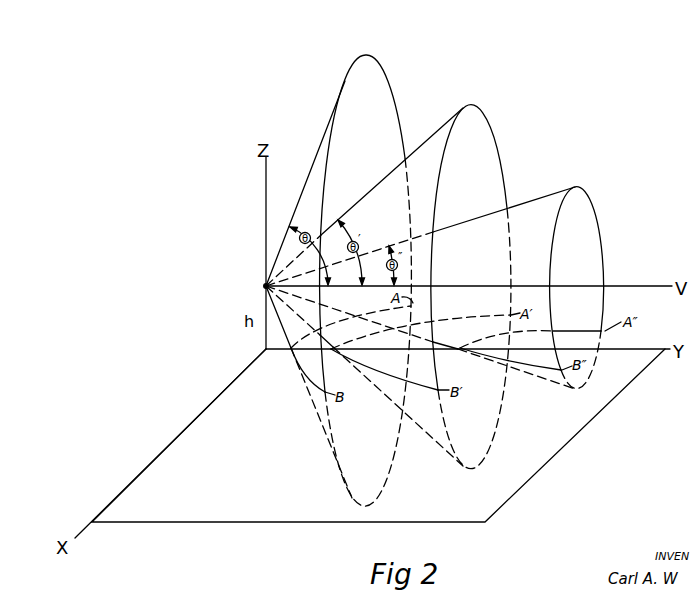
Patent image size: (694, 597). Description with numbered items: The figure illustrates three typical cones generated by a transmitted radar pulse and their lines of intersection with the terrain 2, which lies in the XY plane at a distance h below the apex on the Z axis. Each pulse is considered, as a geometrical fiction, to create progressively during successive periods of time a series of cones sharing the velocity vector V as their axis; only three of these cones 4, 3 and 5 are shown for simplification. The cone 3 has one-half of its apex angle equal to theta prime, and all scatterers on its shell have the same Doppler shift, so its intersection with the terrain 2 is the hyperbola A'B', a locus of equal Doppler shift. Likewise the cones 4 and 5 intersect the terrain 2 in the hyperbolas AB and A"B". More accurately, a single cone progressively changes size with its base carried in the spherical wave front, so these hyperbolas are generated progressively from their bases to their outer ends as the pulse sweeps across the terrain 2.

The terrain 2 is at (265, 510).
The cone 3 is at (495, 128).
The cone 4 is at (385, 73).
The cone 5 is at (592, 198).